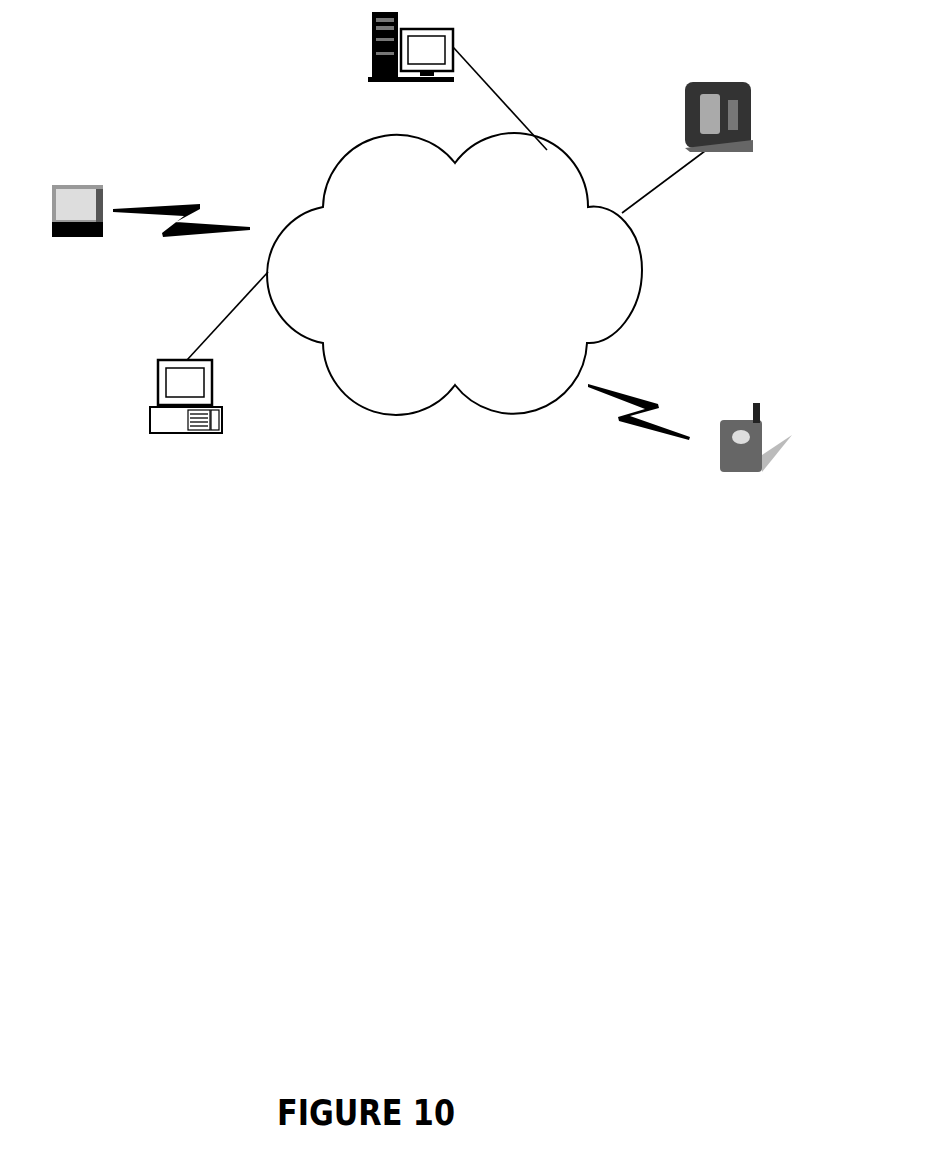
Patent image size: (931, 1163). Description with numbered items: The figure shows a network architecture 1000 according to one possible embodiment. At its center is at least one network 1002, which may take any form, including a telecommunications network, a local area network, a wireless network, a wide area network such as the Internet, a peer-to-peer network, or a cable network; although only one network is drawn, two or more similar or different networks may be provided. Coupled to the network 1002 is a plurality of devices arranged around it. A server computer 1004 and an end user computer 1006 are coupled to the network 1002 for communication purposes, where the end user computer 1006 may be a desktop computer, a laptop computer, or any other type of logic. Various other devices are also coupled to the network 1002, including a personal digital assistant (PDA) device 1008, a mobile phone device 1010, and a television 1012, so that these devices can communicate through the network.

The network architecture 1000 is at (370, 696).
The network 1002 is at (512, 415).
The server computer 1004 is at (372, 45).
The end user computer 1006 is at (152, 412).
The personal digital assistant (PDA) device 1008 is at (73, 185).
The mobile phone device 1010 is at (718, 421).
The television 1012 is at (700, 78).